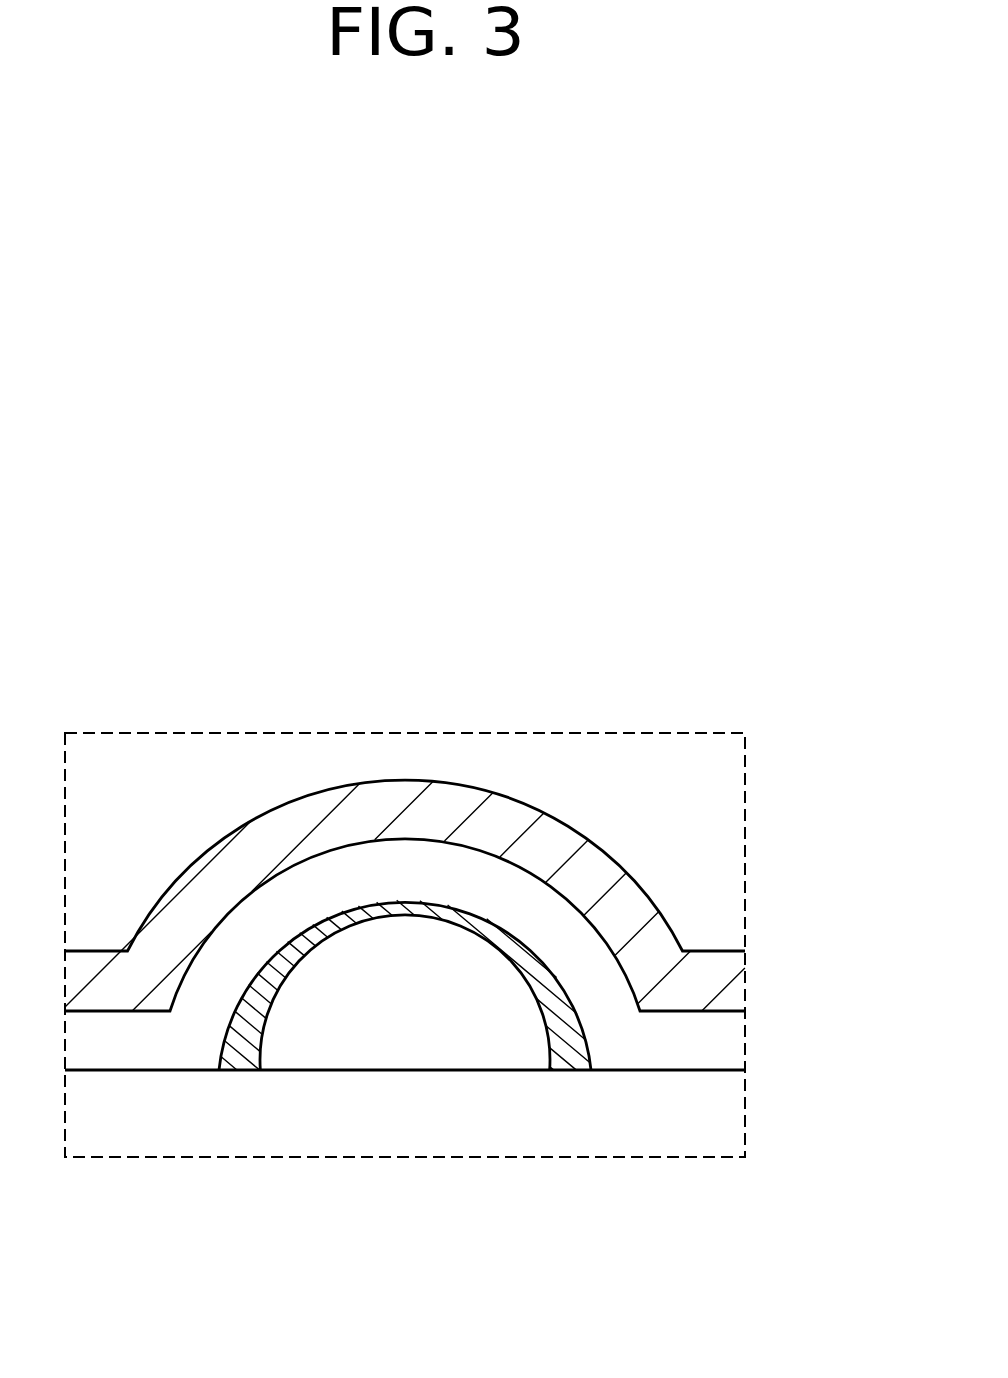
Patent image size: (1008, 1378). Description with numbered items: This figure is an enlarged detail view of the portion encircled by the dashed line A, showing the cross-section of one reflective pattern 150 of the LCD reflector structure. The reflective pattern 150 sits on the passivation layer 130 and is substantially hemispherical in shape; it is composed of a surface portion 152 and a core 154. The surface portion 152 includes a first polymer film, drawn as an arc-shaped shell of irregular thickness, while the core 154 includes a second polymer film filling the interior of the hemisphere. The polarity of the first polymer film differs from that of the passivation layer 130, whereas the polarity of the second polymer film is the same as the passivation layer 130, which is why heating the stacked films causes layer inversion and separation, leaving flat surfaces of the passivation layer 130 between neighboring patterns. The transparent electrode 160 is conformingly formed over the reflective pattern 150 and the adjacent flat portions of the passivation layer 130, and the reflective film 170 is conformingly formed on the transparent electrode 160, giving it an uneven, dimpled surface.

The passivation layer 130 is at (720, 1117).
The reflective pattern 150 is at (398, 1099).
The surface portion 152 is at (240, 1061).
The core 154 is at (325, 1055).
The transparent electrode 160 is at (720, 1052).
The reflective film 170 is at (720, 986).
The portion encircled by the dashed line A is at (422, 1158).